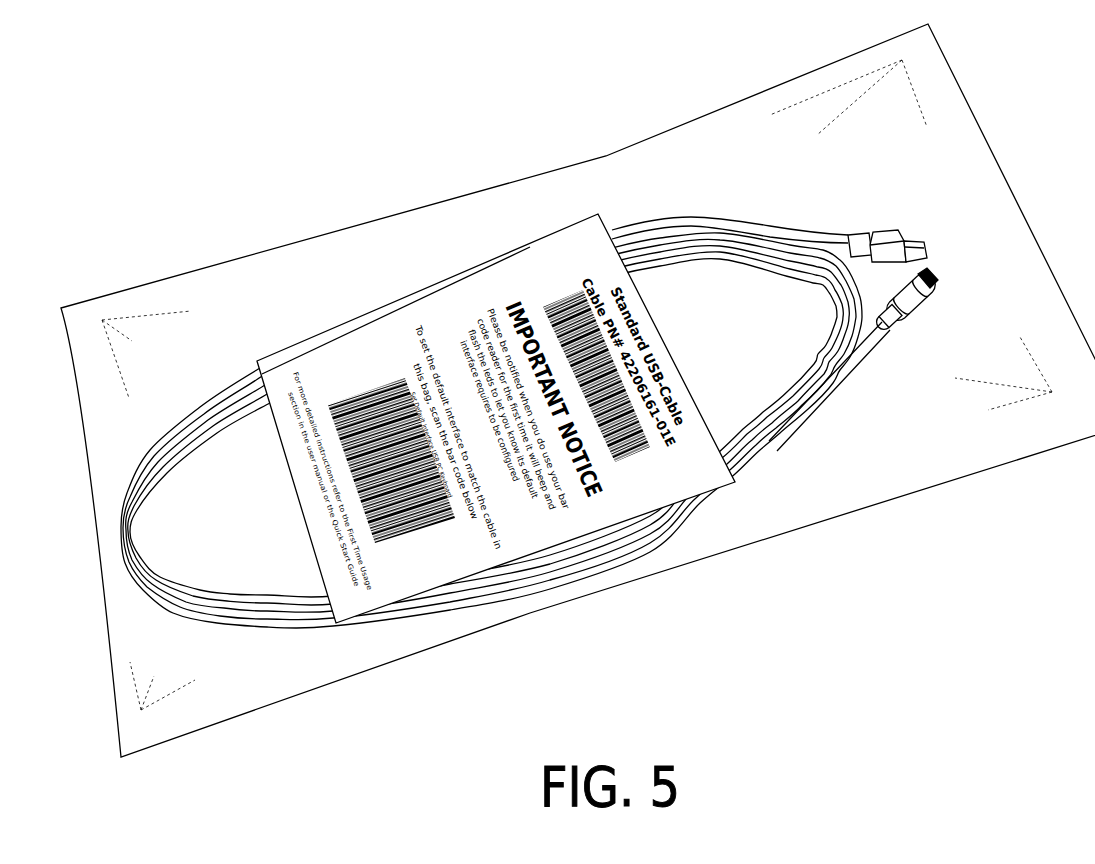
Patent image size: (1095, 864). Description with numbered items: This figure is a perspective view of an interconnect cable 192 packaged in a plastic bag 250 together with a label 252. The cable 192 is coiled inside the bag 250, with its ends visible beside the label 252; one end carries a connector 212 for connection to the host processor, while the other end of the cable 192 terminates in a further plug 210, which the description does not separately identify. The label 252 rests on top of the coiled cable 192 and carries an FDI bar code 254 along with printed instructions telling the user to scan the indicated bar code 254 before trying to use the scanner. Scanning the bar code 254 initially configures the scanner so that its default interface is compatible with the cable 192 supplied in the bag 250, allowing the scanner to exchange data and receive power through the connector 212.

The plastic bag 250 is at (302, 239).
The label 252 is at (652, 307).
The FDI bar code 254 is at (368, 388).
The interconnect cable 192 is at (810, 427).
The connector 210 is at (930, 270).
The connector 212 is at (896, 230).